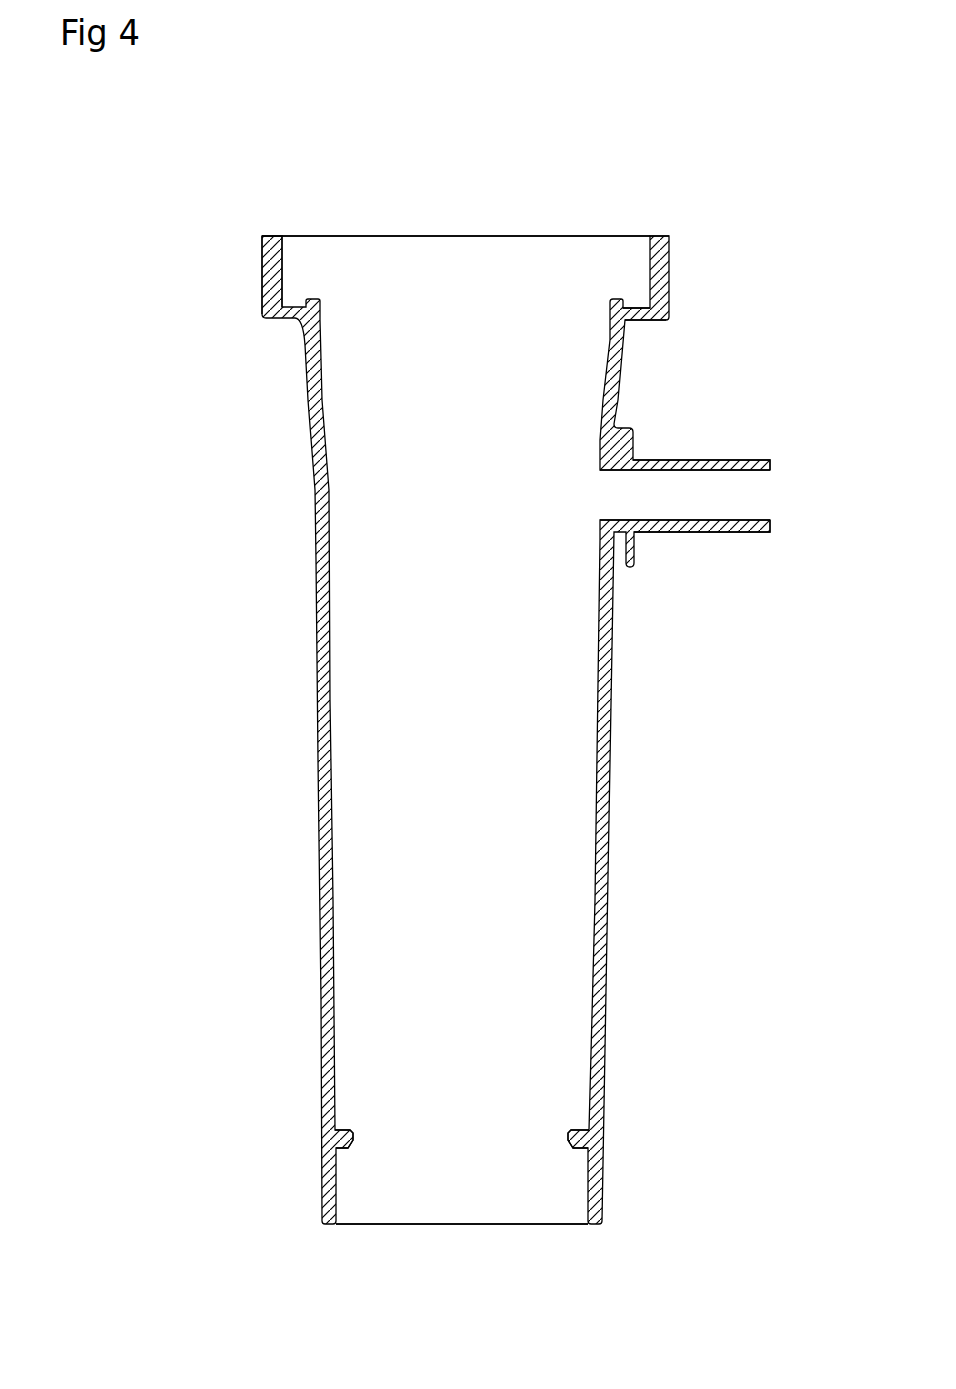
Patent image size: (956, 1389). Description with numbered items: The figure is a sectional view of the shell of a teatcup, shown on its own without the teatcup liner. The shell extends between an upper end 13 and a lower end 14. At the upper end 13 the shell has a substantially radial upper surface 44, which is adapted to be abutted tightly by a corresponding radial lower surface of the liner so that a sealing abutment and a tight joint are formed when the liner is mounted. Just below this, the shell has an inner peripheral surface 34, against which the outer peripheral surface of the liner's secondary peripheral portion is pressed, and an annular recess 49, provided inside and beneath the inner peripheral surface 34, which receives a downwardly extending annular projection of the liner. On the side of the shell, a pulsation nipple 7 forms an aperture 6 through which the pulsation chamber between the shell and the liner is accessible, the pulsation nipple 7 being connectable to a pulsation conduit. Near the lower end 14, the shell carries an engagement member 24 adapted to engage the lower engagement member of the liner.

The upper end 13 is at (238, 229).
The radial upper surface 44 is at (271, 236).
The inner peripheral surface 34 is at (290, 243).
The annular recess 49 is at (638, 308).
The pulsation nipple 7 is at (697, 463).
The aperture 6 is at (612, 493).
The engagement member 24 is at (333, 1138).
The lower end 14 is at (300, 1222).